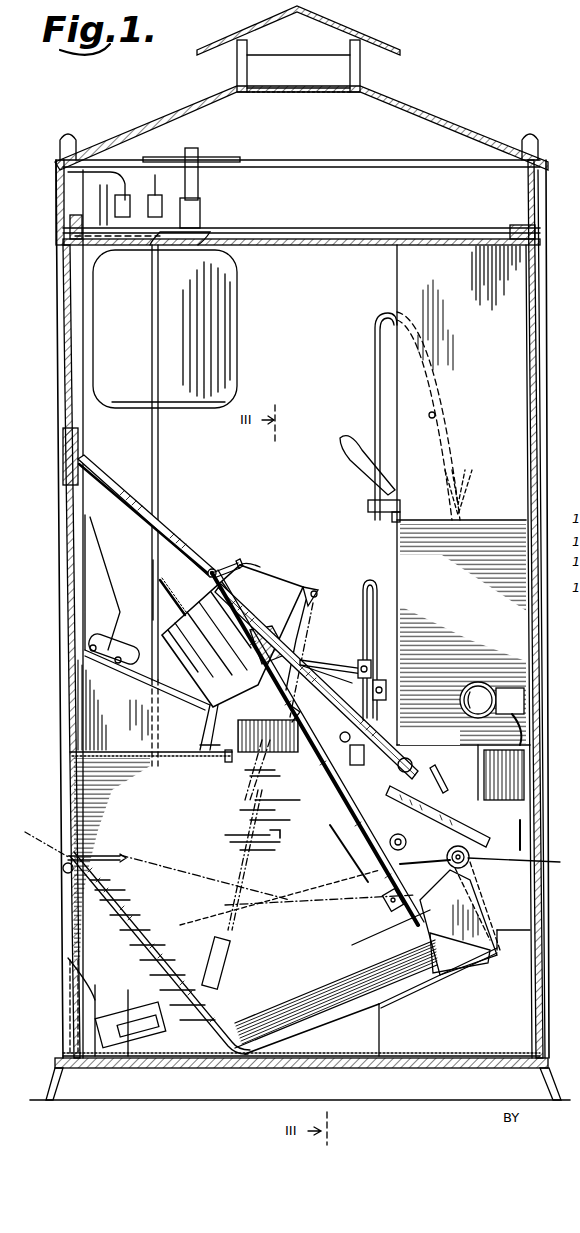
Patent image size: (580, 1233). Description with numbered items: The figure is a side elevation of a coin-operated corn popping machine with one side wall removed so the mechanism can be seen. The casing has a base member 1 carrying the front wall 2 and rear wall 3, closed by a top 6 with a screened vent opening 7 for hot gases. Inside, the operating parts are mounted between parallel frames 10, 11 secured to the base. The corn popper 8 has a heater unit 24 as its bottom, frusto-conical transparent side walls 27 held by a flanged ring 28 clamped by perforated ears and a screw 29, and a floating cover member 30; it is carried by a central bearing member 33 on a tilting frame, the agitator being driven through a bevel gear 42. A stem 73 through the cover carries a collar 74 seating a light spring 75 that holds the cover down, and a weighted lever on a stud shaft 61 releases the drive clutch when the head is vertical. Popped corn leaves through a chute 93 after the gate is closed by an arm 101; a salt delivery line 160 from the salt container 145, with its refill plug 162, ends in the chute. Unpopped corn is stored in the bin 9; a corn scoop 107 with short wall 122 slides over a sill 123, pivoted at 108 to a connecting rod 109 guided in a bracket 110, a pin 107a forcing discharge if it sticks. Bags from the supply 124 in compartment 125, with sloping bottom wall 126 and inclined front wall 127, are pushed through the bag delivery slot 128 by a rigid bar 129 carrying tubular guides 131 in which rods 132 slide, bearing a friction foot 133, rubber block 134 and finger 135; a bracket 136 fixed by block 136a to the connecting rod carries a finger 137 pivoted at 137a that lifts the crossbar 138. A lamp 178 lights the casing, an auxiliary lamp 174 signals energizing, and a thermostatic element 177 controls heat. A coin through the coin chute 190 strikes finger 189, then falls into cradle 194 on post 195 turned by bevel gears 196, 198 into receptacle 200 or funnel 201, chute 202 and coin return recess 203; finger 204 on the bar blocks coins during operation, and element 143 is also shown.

The base member 1 is at (170, 1105).
The front wall 2 is at (70, 787).
The rear wall 3 is at (540, 492).
The top 6 is at (437, 115).
The screened vent opening 7 is at (340, 88).
The corn popper 8 is at (260, 567).
The bin 9 is at (388, 294).
The frame 10 is at (345, 748).
The frame 11 is at (425, 859).
The heater unit 24 is at (298, 628).
The side walls of popper head 27 is at (273, 584).
The flanged ring 28 is at (309, 609).
The perforated ears and screw 29 is at (312, 592).
The floating cover member 30 is at (240, 562).
The central bearing member 33 is at (300, 700).
The bevel gear 42 is at (381, 758).
The stud shaft 61 is at (405, 838).
The stem 73 is at (172, 603).
The collar 74 is at (144, 580).
The light spring 75 is at (167, 610).
The chute 93 is at (113, 705).
The arm 101 is at (96, 530).
The corn scoop 107 is at (360, 462).
The pin 107a is at (432, 412).
The scoop pivot 108 is at (450, 578).
The connecting rod 109 is at (376, 392).
The bracket 110 is at (367, 506).
The short wall 122 is at (482, 525).
The sill 123 is at (391, 520).
The bag supply 124 is at (285, 1000).
The bag compartment 125 is at (235, 889).
The sloping bottom wall 126 is at (332, 1018).
The inclined front wall 127 is at (122, 930).
The bag delivery slot 128 is at (62, 862).
The rigid bar 129 is at (275, 755).
The tubular guides 131 is at (332, 800).
The rods 132 is at (360, 846).
The friction foot 133 is at (388, 905).
The block 134 is at (425, 905).
The finger 135 is at (360, 938).
The bracket 136 is at (362, 620).
The block 136a is at (387, 692).
The finger 137 is at (342, 664).
The pivot 137a is at (372, 665).
The crossbar 138 is at (222, 553).
The rod 143 is at (380, 880).
The salt container 145 is at (165, 329).
The salt delivery line 160 is at (150, 456).
The refill plug 162 is at (202, 212).
The auxiliary lamp 174 is at (478, 682).
The thermostatic element 177 is at (230, 712).
The lamp 178 is at (200, 190).
The finger 189 is at (446, 779).
The coin chute 190 is at (180, 548).
The cradle 194 is at (498, 835).
The post 195 is at (514, 902).
The bevel gear 196 is at (465, 914).
The bevel gear 198 is at (452, 849).
The receptacle 200 is at (441, 1002).
The funnel 201 is at (496, 935).
The chute 202 is at (165, 1034).
The coin return recess 203 is at (72, 1025).
The finger 204 is at (318, 675).